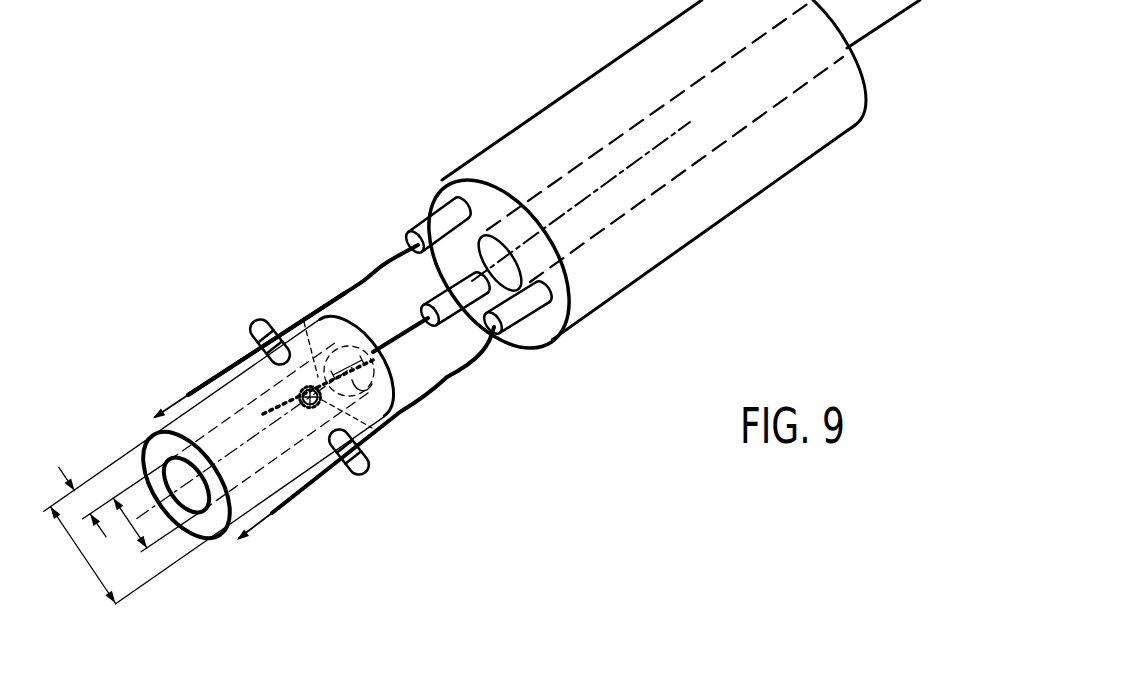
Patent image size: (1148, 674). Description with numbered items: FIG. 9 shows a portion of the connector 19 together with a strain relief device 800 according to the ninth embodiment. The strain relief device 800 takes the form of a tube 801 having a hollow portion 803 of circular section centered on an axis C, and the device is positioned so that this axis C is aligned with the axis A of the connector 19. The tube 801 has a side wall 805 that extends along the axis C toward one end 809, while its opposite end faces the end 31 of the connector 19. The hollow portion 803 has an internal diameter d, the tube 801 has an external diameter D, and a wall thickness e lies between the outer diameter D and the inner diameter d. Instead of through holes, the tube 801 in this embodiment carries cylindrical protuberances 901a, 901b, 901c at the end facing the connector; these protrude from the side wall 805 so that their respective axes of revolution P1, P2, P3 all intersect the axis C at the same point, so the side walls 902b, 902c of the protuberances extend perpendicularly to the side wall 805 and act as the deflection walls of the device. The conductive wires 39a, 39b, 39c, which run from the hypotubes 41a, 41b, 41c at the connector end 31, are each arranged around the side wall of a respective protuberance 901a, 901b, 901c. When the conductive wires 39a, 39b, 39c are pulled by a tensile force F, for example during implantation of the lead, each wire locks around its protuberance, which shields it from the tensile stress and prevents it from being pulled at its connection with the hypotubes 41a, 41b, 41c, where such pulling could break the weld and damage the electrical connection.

The connector 19 is at (625, 72).
The end of the connector 31 is at (478, 197).
The axis of the connector A is at (637, 165).
The strain relief device 800 is at (335, 179).
The hypotube 41a is at (437, 297).
The hypotube 41b is at (432, 215).
The hypotube 41c is at (527, 310).
The conductive wire 39a is at (410, 315).
The conductive wire 39b is at (370, 270).
The conductive wire 39c is at (478, 358).
The tube 801 is at (153, 430).
The hollow portion 803 is at (187, 500).
The side wall 805 is at (197, 392).
The end of the tube 809 is at (215, 528).
The cylindrical protuberance 901a is at (372, 390).
The cylindrical protuberance 901b is at (263, 317).
The cylindrical protuberance 901c is at (360, 473).
The side wall of protuberance 902b is at (302, 327).
The side wall of protuberance 902c is at (367, 446).
The axis of revolution P1 is at (247, 309).
The axis of revolution P2 is at (358, 353).
The axis of revolution P3 is at (375, 486).
The tensile force F is at (172, 400).
The axis of the tube C is at (253, 437).
The external diameter D is at (85, 563).
The internal diameter d is at (123, 530).
The thickness e is at (88, 498).